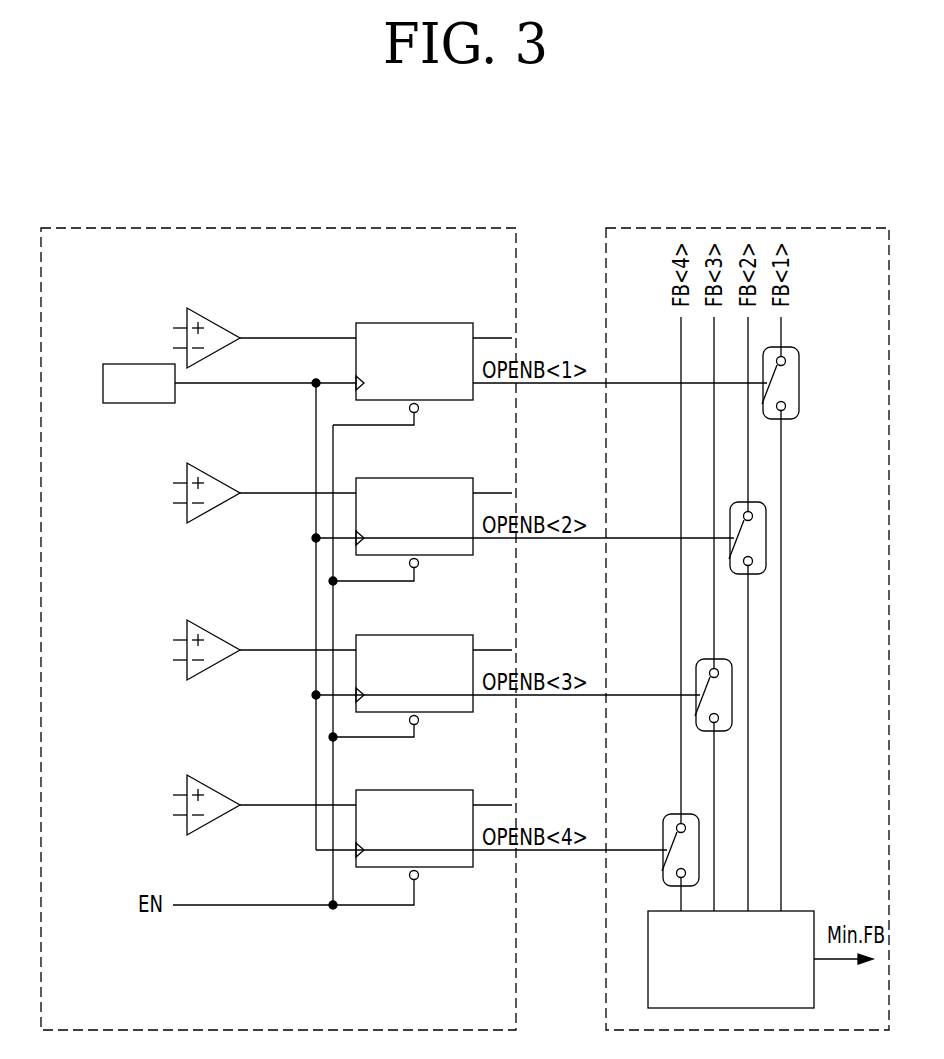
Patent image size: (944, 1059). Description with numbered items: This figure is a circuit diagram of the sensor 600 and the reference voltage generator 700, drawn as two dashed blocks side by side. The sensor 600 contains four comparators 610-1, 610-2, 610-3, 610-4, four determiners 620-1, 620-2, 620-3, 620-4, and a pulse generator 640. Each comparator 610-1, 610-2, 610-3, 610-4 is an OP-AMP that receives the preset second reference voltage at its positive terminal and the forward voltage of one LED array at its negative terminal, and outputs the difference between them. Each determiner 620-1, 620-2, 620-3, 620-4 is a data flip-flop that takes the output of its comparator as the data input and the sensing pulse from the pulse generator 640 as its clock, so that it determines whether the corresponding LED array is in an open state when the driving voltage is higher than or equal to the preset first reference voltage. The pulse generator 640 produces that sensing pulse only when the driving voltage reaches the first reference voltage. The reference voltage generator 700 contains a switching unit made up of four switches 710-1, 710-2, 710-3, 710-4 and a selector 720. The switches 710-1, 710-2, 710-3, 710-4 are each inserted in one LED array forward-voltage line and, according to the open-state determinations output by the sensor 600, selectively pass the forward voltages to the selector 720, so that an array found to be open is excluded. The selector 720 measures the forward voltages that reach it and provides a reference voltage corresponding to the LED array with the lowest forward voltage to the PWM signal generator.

The sensor 600 is at (377, 228).
The reference voltage generator 700 is at (644, 228).
The comparator 610-1 is at (187, 318).
The comparator 610-2 is at (187, 473).
The comparator 610-3 is at (187, 630).
The comparator 610-4 is at (187, 785).
The determiner 620-1 is at (383, 323).
The determiner 620-2 is at (383, 478).
The determiner 620-3 is at (383, 635).
The determiner 620-4 is at (383, 790).
The pulse generator 640 is at (103, 383).
The switch 710-1 is at (793, 380).
The switch 710-2 is at (761, 535).
The switch 710-3 is at (696, 660).
The switch 710-4 is at (664, 815).
The selector 720 is at (800, 911).